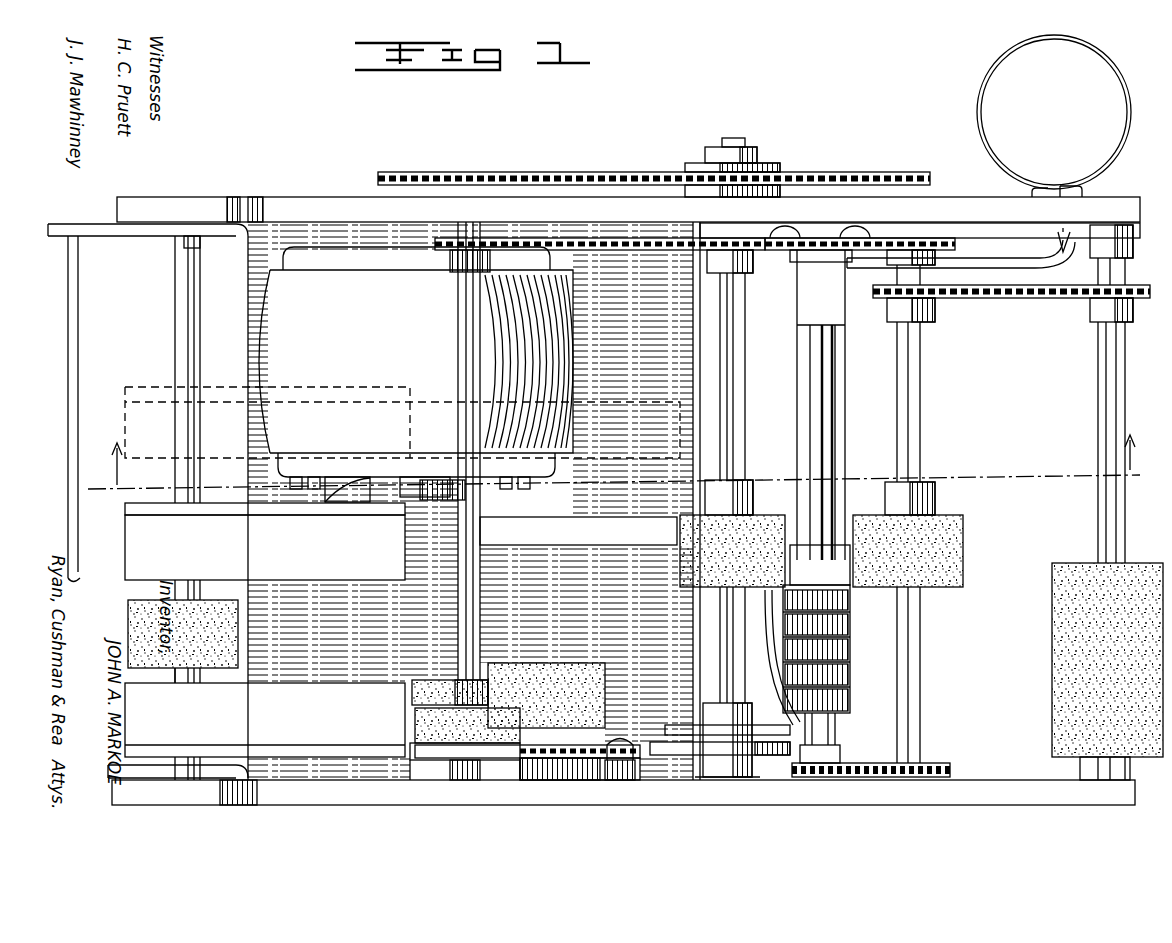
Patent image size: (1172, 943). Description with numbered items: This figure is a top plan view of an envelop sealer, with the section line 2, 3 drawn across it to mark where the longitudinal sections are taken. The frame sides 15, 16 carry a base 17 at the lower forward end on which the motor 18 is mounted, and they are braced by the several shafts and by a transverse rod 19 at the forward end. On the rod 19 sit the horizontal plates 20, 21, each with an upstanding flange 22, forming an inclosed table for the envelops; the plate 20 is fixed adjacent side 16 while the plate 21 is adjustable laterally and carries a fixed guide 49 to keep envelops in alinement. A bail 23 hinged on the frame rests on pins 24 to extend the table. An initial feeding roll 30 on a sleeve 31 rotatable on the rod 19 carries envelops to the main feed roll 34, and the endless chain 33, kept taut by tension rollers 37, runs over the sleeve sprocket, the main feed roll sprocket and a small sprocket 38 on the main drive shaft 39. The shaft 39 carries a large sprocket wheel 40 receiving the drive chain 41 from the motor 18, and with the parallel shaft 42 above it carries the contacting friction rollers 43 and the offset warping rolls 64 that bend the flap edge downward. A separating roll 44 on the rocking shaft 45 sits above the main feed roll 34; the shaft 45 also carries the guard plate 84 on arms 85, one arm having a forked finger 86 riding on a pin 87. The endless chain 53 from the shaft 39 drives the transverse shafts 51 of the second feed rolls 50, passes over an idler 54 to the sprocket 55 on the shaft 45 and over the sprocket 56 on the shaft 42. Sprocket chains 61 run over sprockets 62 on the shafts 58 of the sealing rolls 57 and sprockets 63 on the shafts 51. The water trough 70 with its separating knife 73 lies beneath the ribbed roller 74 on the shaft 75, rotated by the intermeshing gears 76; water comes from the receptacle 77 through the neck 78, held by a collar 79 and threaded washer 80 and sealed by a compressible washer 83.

The frame side 15 is at (594, 216).
The frame side 16 is at (621, 785).
The base 17 is at (694, 501).
The motor 18 is at (416, 374).
The transverse rod 19 is at (186, 308).
The horizontal plate 20 is at (265, 720).
The horizontal plate 21 is at (265, 547).
The upstanding side flange 22 is at (197, 503).
The bail 23 is at (82, 570).
The pin 24 is at (184, 241).
The initial feeding roll 30 is at (128, 631).
The sleeve 31 is at (177, 676).
The endless chain 33 is at (540, 758).
The main feed roll 34 is at (548, 663).
The tension roller 37 is at (625, 760).
The small sprocket 38 is at (752, 770).
The main drive shaft 39 is at (745, 140).
The large sprocket wheel 40 is at (780, 165).
The drive chain 41 is at (598, 172).
The parallel shaft 42 is at (745, 355).
The friction roller 43 is at (760, 515).
The separating roll 44 is at (415, 715).
The rocking shaft 45 is at (482, 603).
The fixed guide 49 is at (578, 531).
The second feed roll 50 is at (963, 530).
The transverse shaft 51 is at (920, 432).
The endless chain 53 is at (605, 238).
The idler 54 is at (955, 244).
The sprocket 55 is at (450, 262).
The sprocket 56 is at (753, 262).
The sealing roll 57 is at (1052, 625).
The transverse shaft 58 is at (1098, 410).
The sprocket chain 61 is at (1040, 298).
The sprocket 62 is at (1090, 315).
The sprocket 63 is at (935, 318).
The warping roll 64 is at (690, 725).
The water trough 70 is at (845, 385).
The separating knife 73 is at (768, 615).
The ribbed roller 74 is at (832, 627).
The shaft 75 is at (822, 445).
The intermeshing gears 76 is at (840, 763).
The receptacle 77 is at (1054, 112).
The neck 78 is at (961, 257).
The collar 79 is at (1068, 248).
The threaded washer 80 is at (1084, 197).
The compressible washer 83 is at (1032, 190).
The guard plate 84 is at (432, 680).
The arm 85 is at (478, 680).
The forked finger 86 is at (440, 760).
The pin 87 is at (470, 776).
The section line 2 is at (597, 470).
The section line 3 is at (1139, 461).